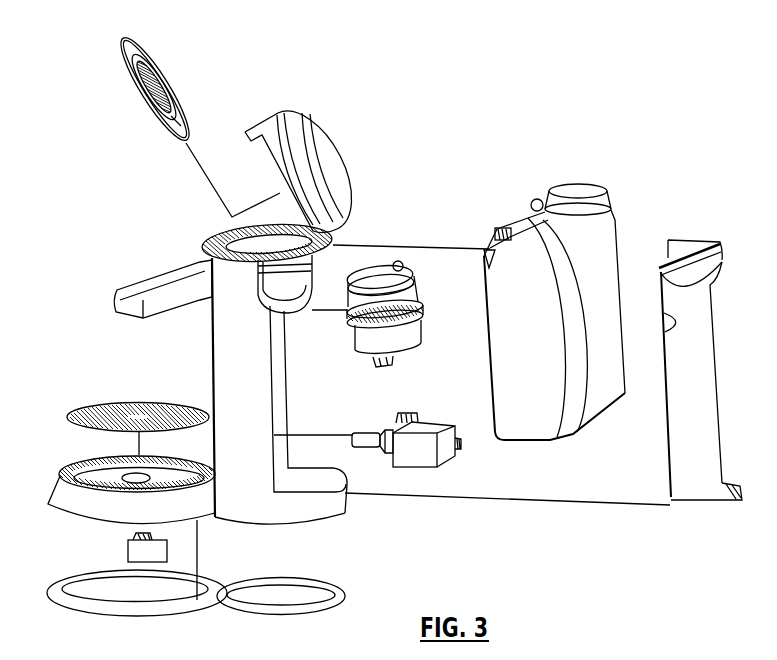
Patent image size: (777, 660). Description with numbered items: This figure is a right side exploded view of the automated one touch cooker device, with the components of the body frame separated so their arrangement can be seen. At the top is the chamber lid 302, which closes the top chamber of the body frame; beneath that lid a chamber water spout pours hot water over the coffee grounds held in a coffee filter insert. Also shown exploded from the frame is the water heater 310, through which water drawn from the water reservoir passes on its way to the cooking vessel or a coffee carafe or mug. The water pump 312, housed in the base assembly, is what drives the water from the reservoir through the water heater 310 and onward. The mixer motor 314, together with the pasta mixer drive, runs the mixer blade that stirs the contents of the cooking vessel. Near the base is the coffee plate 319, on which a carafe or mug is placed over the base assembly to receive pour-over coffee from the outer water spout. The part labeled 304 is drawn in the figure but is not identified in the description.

The chamber lid 302 is at (320, 134).
The lid 304 is at (137, 90).
The water heater 310 is at (391, 266).
The water pump 312 is at (444, 472).
The mixer motor 314 is at (125, 553).
The coffee plate 319 is at (89, 414).